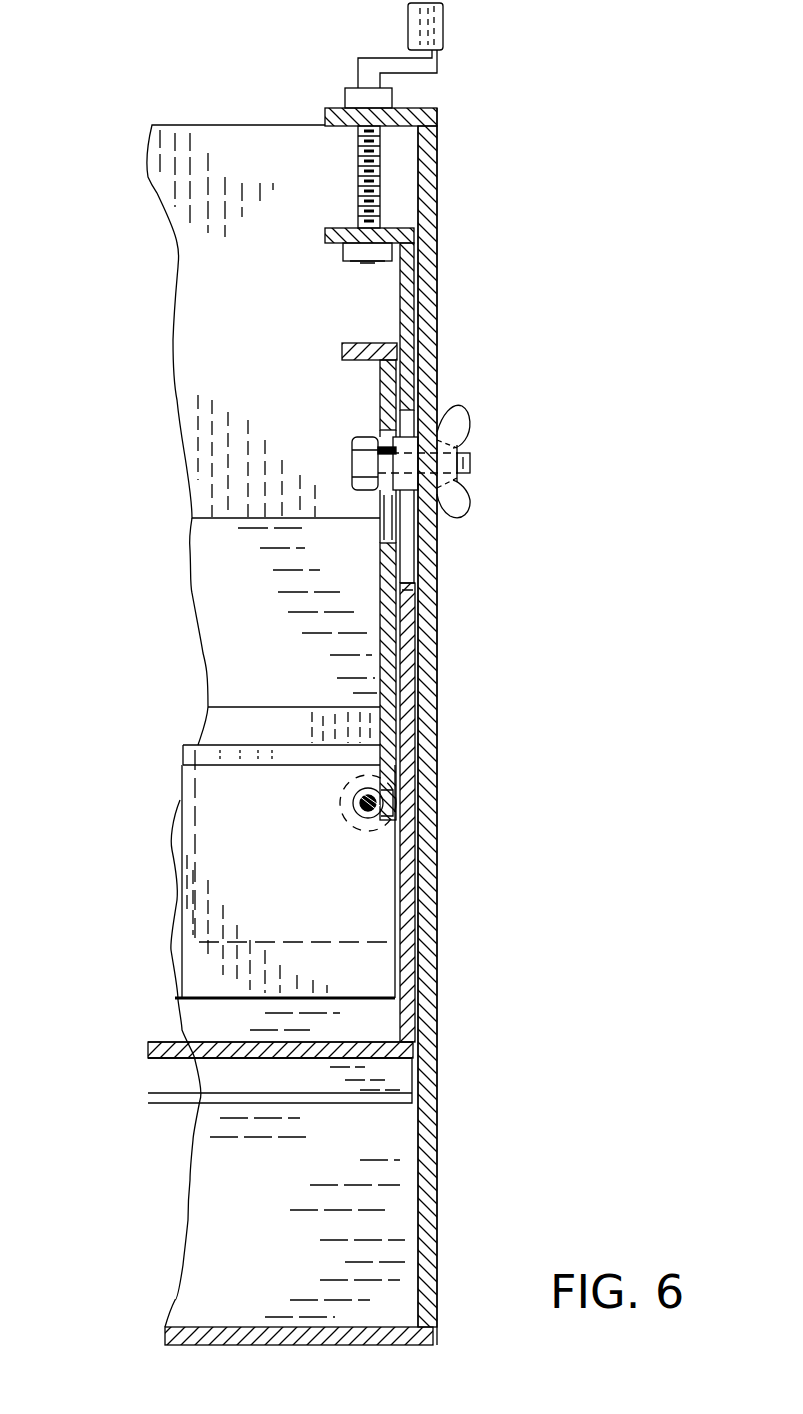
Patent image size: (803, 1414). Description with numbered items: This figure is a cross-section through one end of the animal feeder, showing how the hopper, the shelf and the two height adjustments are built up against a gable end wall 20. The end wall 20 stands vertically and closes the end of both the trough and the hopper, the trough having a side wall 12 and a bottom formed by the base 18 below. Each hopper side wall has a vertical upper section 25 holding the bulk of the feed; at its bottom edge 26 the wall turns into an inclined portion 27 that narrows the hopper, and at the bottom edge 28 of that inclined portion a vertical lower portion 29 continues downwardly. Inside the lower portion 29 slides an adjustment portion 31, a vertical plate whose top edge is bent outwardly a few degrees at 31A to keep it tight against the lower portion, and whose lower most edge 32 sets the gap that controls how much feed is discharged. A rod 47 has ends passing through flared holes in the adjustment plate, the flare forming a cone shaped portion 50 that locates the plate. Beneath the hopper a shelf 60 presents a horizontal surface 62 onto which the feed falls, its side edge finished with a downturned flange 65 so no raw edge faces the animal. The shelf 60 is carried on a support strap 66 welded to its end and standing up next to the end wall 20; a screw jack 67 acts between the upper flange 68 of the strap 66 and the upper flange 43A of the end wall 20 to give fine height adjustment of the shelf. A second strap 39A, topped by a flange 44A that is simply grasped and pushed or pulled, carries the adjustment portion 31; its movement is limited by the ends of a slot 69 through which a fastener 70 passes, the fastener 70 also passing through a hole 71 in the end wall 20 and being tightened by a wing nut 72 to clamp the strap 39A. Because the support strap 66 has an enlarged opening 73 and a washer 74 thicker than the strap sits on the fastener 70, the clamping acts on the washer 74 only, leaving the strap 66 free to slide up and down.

The base panel 12 is at (215, 1242).
The base of the trough 18 is at (200, 1325).
The end wall 20 is at (437, 1184).
The vertical upper section 25 is at (192, 309).
The bottom edge of the upper section 26 is at (192, 527).
The inclined portion 27 is at (205, 596).
The bottom edge of the inclined portion 28 is at (222, 707).
The vertical lower portion 29 is at (224, 727).
The outwardly bent top edge 31A is at (183, 748).
The adjustment portion 31 is at (182, 805).
The lower most edge 32 is at (178, 998).
The strap 39A is at (380, 618).
The upper flange of the gable wall 43A is at (339, 121).
The flange 44A is at (350, 343).
The rod 47 is at (360, 805).
The cone shaped portion 50 is at (370, 830).
The shelf 60 is at (136, 1066).
The horizontal surface of the shelf 62 is at (165, 1038).
The downturned flange 65 is at (182, 1085).
The support strap 66 is at (402, 892).
The screw jack 67 is at (447, 75).
The upper flange of the strap 68 is at (325, 235).
The slot 69 is at (383, 538).
The fastener 70 is at (473, 450).
The hole 71 is at (437, 424).
The wing nut 72 is at (456, 497).
The enlarged opening 73 is at (405, 588).
The washer 74 is at (400, 483).